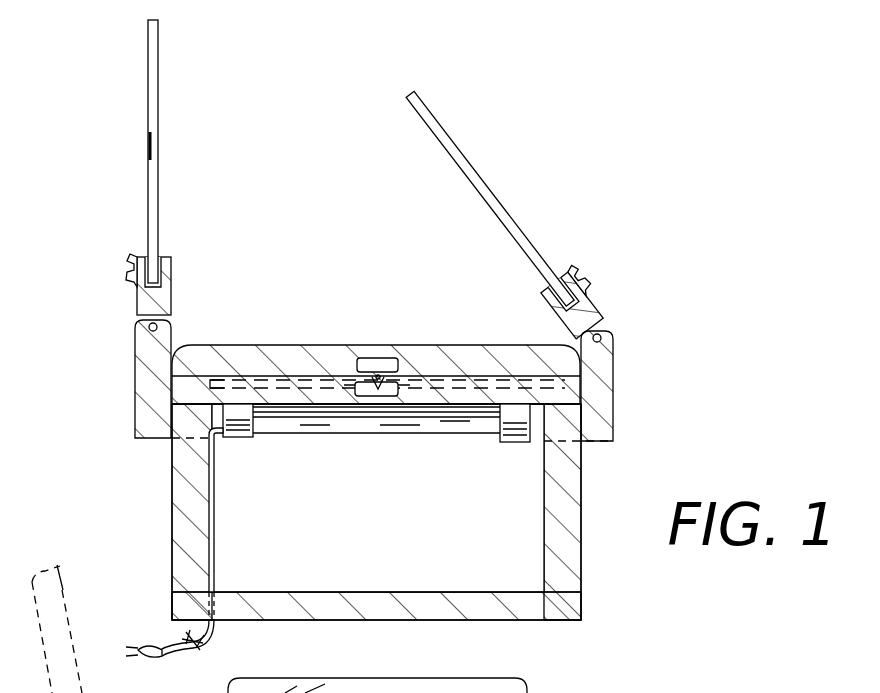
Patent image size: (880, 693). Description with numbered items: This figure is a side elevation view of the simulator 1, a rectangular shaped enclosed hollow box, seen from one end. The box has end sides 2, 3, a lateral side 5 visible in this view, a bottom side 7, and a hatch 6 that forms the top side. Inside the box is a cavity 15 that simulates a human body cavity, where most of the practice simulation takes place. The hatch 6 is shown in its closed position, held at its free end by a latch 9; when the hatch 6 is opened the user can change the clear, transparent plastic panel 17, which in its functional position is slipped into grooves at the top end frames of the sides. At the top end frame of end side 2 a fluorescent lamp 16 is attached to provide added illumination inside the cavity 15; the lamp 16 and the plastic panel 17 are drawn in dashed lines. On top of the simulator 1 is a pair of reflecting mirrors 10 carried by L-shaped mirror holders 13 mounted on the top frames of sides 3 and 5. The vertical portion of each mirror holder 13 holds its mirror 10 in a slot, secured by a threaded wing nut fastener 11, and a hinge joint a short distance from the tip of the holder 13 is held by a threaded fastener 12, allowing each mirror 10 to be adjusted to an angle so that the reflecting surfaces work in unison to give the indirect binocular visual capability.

The simulator 1 is at (593, 522).
The end side 2 is at (318, 546).
The end side 3 is at (172, 520).
The lateral side 5 is at (581, 572).
The hatch 6 is at (327, 344).
The bottom side 7 is at (545, 620).
The latch 9 is at (385, 358).
The reflecting mirror 10 is at (150, 160).
The threaded wing nut fastener 11 is at (127, 262).
The threaded fastener 12 is at (140, 314).
The mirror holder 13 is at (136, 372).
The cavity 15 is at (365, 570).
The fluorescent lamp 16 is at (447, 437).
The plastic panel 17 is at (232, 378).